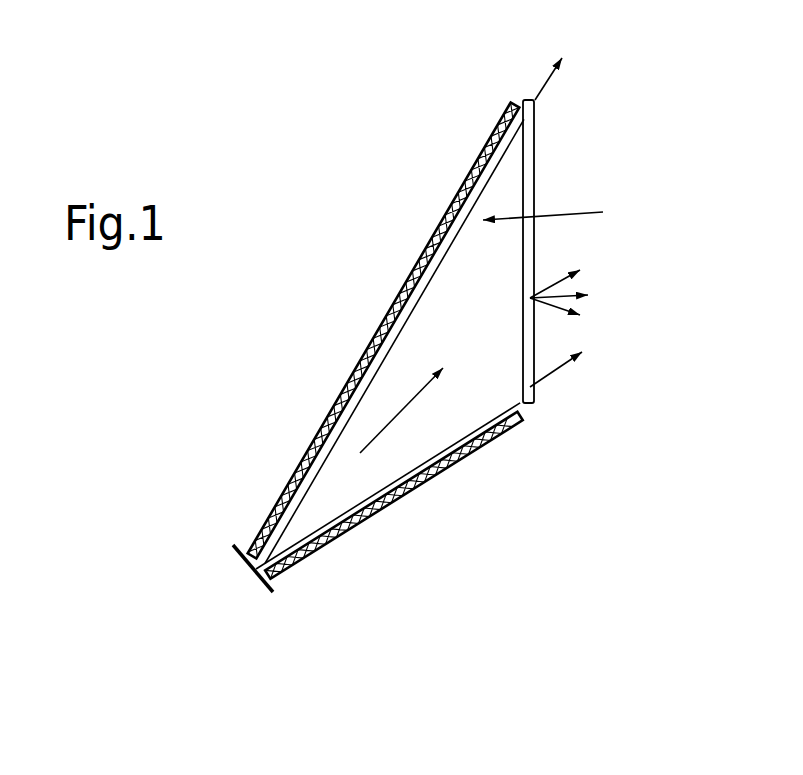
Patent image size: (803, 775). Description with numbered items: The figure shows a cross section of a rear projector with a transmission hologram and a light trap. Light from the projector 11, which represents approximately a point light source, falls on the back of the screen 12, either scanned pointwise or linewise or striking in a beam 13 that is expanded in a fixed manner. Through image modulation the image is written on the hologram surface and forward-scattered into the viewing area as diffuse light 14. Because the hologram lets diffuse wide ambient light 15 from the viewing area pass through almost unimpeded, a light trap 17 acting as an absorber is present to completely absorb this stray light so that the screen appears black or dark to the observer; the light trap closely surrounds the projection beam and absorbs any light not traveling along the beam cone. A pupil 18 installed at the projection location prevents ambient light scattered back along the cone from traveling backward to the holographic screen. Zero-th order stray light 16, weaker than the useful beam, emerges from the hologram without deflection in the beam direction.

The projector 11 is at (255, 570).
The screen 12 is at (537, 130).
The beam 13 is at (407, 403).
The diffuse light 14 is at (586, 298).
The ambient light 15 is at (561, 213).
The stray light 16 is at (564, 61).
The light trap 17 is at (375, 520).
The pupil 18 is at (233, 545).